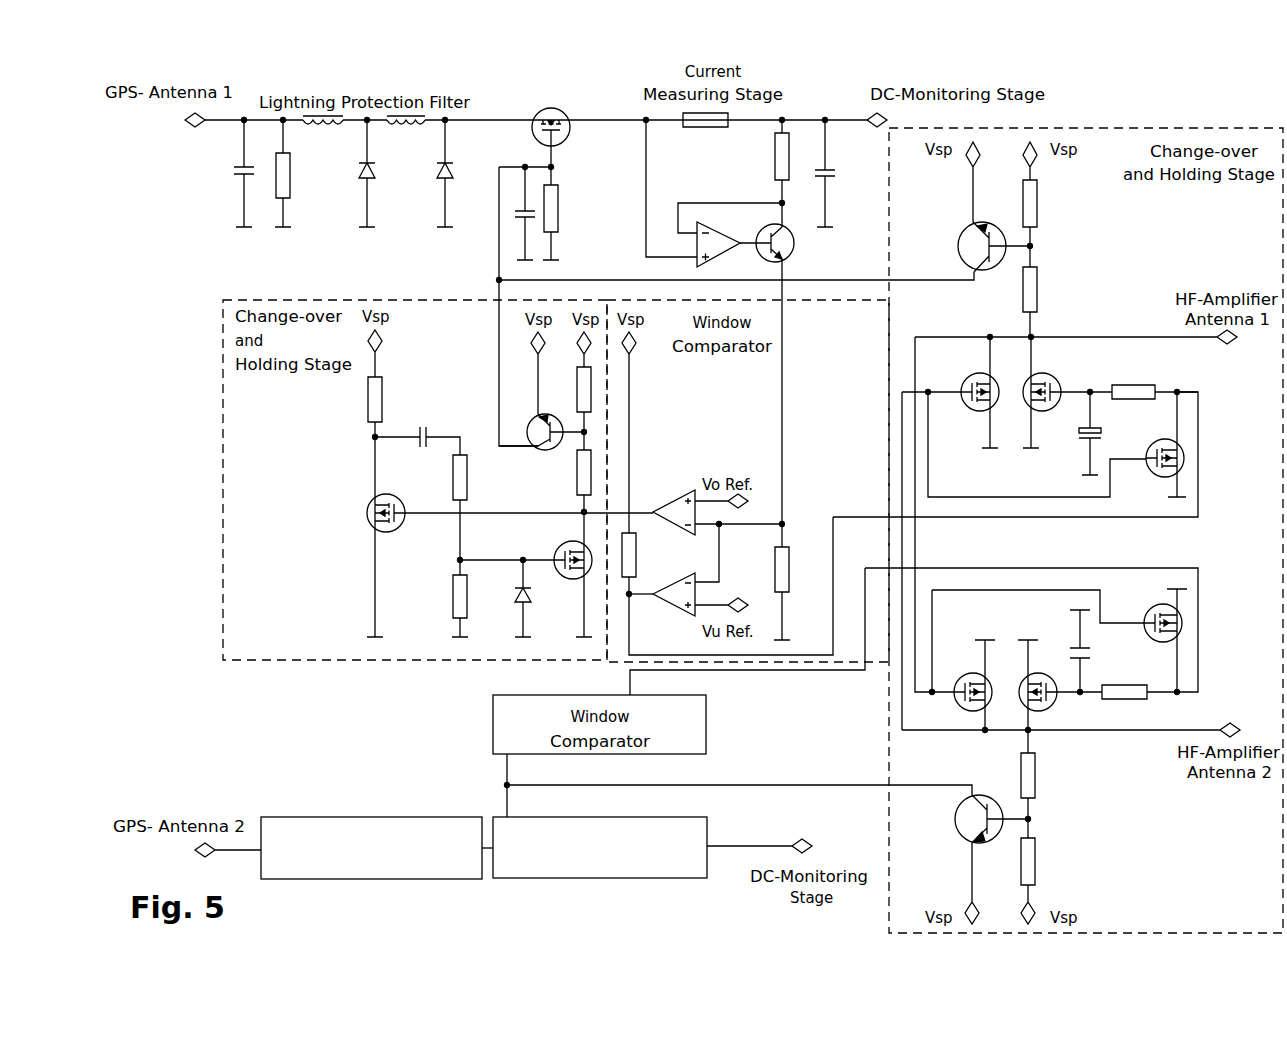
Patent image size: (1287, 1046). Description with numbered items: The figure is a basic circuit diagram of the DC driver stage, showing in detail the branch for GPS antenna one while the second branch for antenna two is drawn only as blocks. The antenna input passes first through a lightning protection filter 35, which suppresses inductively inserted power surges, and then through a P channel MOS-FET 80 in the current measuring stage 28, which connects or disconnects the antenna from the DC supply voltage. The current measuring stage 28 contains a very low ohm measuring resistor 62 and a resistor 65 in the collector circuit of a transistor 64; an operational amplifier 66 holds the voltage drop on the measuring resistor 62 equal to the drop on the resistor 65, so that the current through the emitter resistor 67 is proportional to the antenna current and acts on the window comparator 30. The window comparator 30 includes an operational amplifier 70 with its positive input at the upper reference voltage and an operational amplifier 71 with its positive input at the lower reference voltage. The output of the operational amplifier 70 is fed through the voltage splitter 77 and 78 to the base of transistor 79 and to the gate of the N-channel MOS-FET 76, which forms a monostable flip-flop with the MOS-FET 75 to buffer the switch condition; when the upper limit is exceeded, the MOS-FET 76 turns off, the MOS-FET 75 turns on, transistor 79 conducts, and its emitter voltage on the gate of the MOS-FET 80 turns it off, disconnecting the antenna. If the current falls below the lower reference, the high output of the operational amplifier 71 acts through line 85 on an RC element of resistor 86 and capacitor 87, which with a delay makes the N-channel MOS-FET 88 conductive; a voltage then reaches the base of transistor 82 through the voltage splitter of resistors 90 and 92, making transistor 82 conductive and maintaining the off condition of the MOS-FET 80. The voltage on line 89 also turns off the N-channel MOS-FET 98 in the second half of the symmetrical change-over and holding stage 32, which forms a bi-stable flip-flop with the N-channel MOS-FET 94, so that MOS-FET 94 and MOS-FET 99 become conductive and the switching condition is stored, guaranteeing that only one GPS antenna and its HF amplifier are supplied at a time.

The current measuring stage 28 is at (690, 862).
The window comparator 30 is at (1110, 142).
The change-over and holding stage 32 is at (250, 563).
The lightning protection filter 35 is at (450, 827).
The measuring resistor 62 is at (690, 122).
The transistor 64 is at (785, 246).
The resistor 65 is at (775, 165).
The operational amplifier 66 is at (690, 253).
The emitter resistor 67 is at (780, 565).
The operational amplifier 70 is at (683, 512).
The operational amplifier 71 is at (683, 594).
The MOS-FET 75 is at (560, 552).
The N-channel MOS-FET 76 is at (365, 510).
The voltage splitter resistor 77 is at (578, 482).
The voltage splitter resistor 78 is at (585, 400).
The transistor 79 is at (540, 430).
The P channel MOS-FET 80 is at (551, 108).
The transistor 82 is at (975, 245).
The line 85 is at (1042, 520).
The resistor 86 is at (1130, 390).
The capacitor 87 is at (1100, 430).
The N-channel MOS-FET 88 is at (1040, 380).
The line 89 is at (1058, 337).
The resistor 90 is at (1033, 290).
The resistor 92 is at (1030, 205).
The N-channel MOS-FET 94 is at (968, 378).
The N-channel MOS-FET 98 is at (970, 680).
The MOS-FET 99 is at (1170, 478).